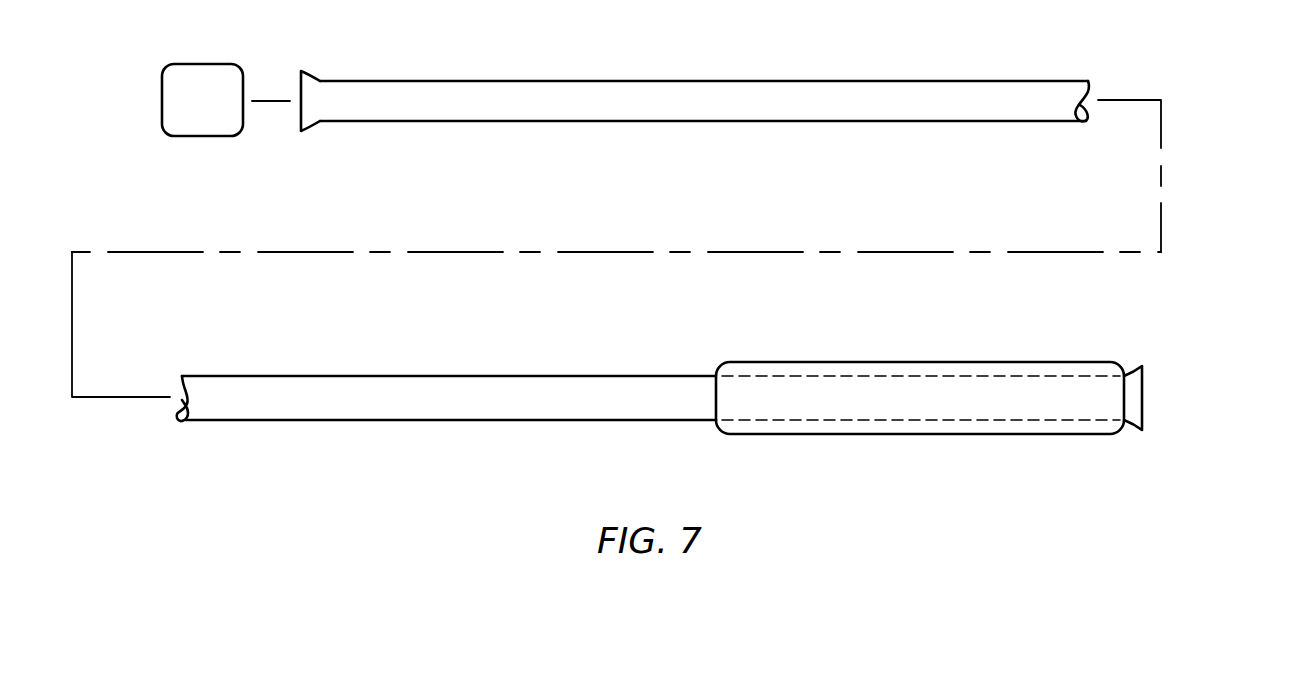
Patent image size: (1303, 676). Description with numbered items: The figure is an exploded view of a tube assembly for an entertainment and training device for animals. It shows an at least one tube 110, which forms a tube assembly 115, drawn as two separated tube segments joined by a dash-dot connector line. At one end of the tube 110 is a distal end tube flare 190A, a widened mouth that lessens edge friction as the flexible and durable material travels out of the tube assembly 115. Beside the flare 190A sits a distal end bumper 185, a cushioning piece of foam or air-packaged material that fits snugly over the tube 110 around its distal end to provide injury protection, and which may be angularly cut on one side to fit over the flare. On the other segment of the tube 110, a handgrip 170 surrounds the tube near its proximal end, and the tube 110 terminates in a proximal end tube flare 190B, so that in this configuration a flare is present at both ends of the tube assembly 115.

The distal end bumper 185 is at (201, 136).
The at least one tube 110 is at (722, 121).
The tube assembly 115 is at (440, 376).
The distal end tube flare 190A is at (301, 130).
The handgrip 170 is at (903, 362).
The proximal end tube flare 190B is at (1141, 368).